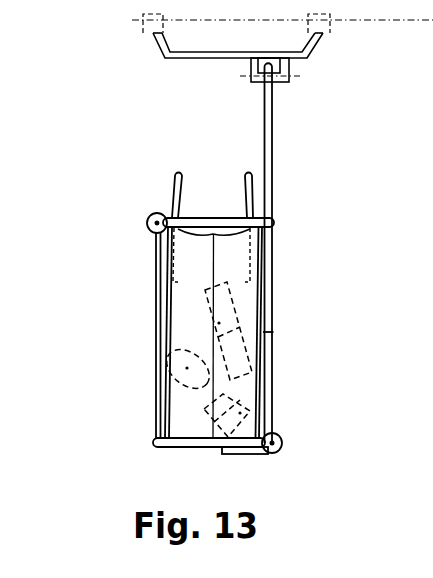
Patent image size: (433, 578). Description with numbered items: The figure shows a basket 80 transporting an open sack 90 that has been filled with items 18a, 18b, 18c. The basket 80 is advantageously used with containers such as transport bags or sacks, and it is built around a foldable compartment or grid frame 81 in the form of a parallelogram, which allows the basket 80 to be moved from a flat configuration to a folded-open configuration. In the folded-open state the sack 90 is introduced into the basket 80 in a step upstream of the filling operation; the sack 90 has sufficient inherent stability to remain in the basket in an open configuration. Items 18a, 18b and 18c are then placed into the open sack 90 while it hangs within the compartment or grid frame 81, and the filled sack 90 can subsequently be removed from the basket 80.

The basket 80 is at (138, 160).
The foldable compartment or grid frame 81 is at (273, 332).
The sack 90 is at (273, 247).
The item 18a is at (275, 406).
The item 18b is at (175, 367).
The item 18c is at (207, 322).